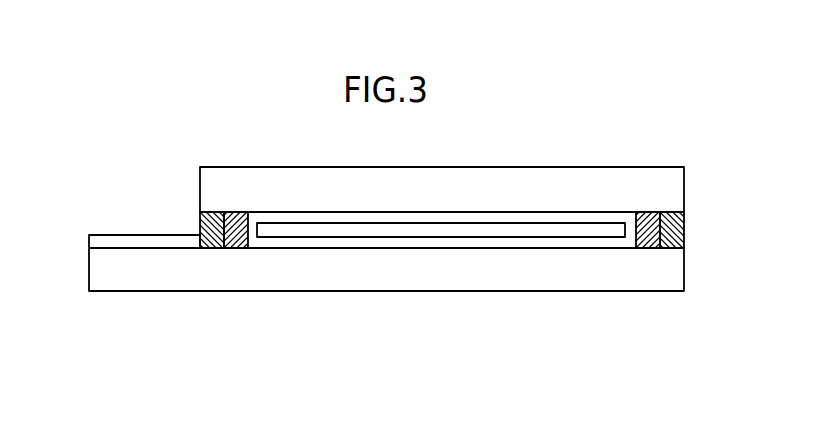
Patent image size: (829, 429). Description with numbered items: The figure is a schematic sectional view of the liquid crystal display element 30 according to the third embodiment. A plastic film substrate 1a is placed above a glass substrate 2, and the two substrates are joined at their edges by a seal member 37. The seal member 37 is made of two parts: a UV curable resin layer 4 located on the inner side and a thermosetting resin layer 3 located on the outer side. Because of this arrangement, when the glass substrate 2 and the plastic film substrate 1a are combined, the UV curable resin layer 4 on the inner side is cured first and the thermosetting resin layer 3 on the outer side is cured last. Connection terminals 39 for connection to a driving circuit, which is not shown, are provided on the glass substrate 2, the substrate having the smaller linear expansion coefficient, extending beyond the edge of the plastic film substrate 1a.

The liquid crystal display element 30 is at (668, 118).
The plastic film substrate 1a is at (200, 192).
The glass substrate 2 is at (97, 267).
The connection terminals 39 is at (113, 239).
The thermosetting resin layer 3 is at (200, 228).
The UV curable resin layer 4 is at (227, 248).
The seal member 37 is at (213, 262).